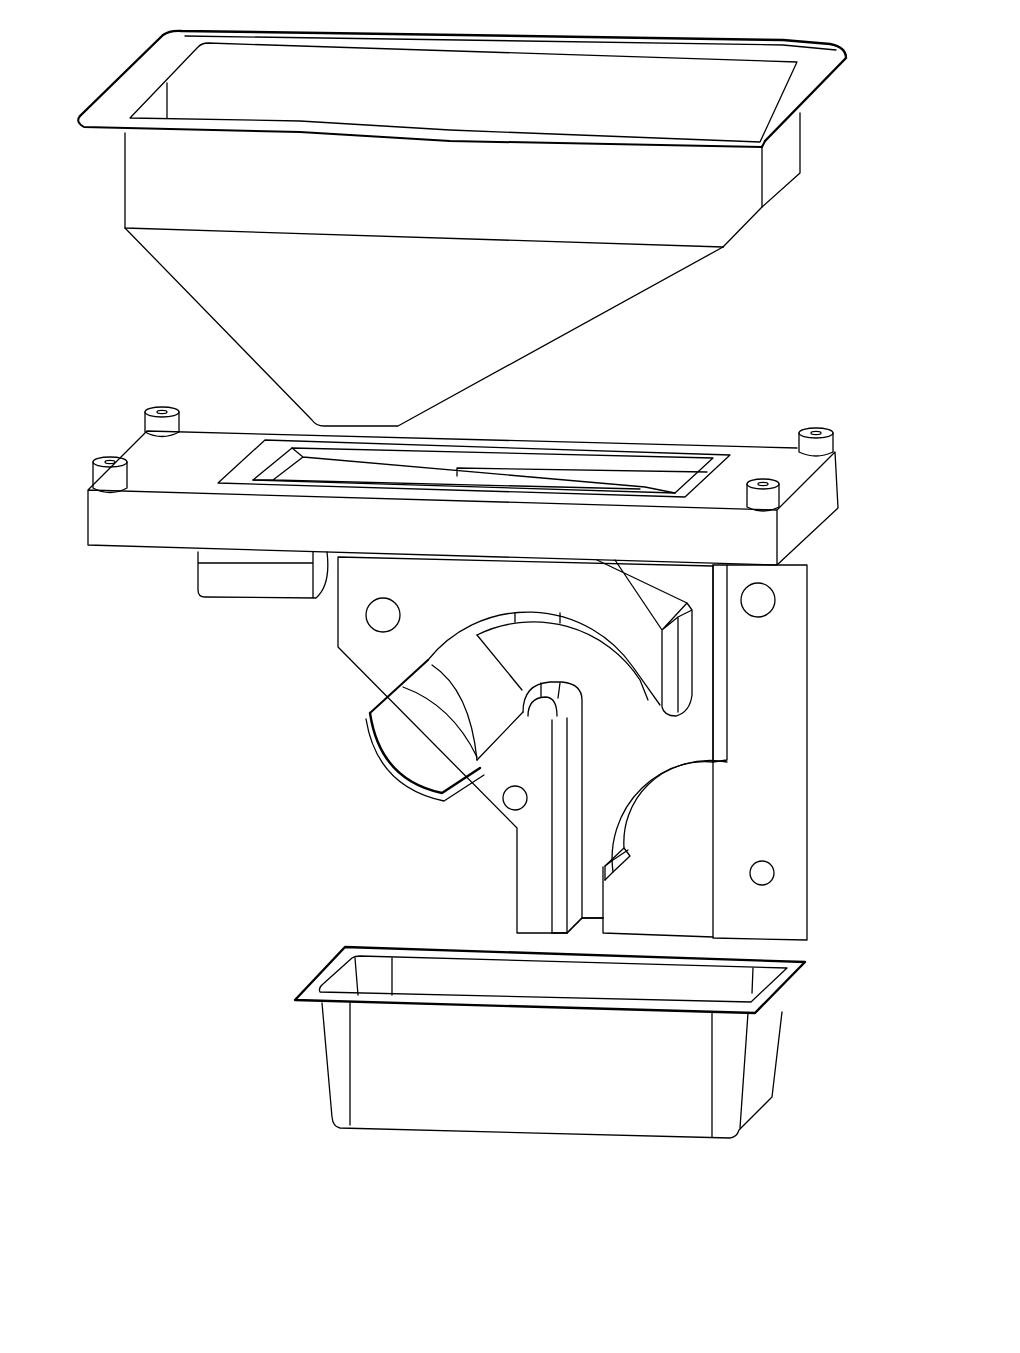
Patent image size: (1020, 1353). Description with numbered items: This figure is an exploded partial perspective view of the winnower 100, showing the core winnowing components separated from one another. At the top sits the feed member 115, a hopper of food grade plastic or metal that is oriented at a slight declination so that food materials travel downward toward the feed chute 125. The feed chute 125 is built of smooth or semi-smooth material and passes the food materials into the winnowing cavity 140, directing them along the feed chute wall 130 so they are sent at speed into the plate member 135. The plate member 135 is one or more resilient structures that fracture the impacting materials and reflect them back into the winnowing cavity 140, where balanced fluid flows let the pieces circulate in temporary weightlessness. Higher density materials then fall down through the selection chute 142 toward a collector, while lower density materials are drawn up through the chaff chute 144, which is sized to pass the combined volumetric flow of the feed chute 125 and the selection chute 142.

The winnower 100 is at (198, 1121).
The feed member 115 is at (382, 475).
The feed chute 125 is at (692, 594).
The feed chute wall 130 is at (683, 832).
The plate member 135 is at (575, 817).
The winnowing cavity 140 is at (662, 781).
The selection chute 142 is at (580, 904).
The chaff chute 144 is at (603, 676).